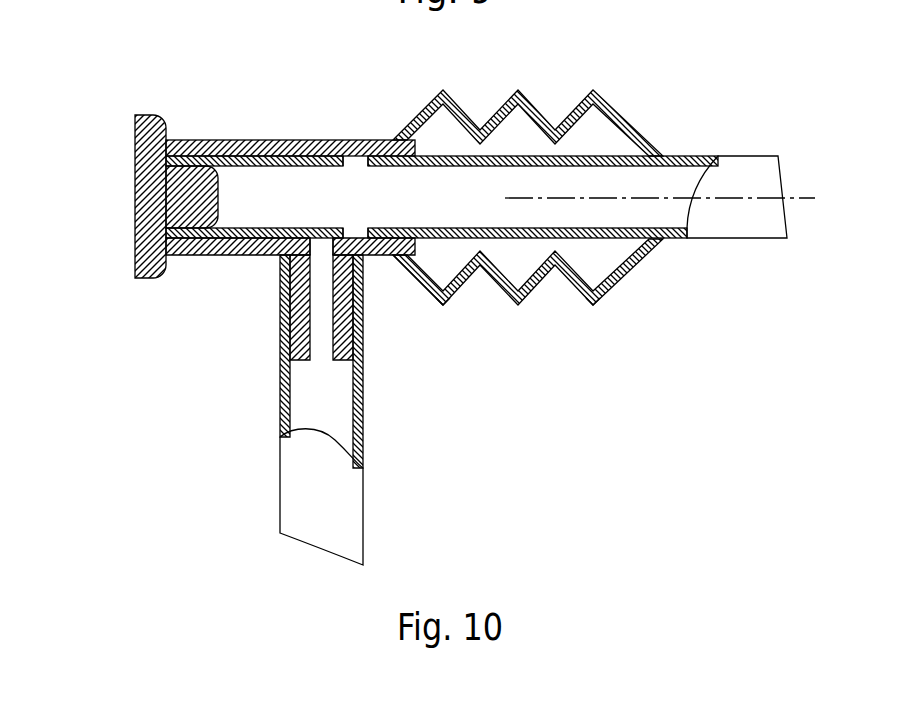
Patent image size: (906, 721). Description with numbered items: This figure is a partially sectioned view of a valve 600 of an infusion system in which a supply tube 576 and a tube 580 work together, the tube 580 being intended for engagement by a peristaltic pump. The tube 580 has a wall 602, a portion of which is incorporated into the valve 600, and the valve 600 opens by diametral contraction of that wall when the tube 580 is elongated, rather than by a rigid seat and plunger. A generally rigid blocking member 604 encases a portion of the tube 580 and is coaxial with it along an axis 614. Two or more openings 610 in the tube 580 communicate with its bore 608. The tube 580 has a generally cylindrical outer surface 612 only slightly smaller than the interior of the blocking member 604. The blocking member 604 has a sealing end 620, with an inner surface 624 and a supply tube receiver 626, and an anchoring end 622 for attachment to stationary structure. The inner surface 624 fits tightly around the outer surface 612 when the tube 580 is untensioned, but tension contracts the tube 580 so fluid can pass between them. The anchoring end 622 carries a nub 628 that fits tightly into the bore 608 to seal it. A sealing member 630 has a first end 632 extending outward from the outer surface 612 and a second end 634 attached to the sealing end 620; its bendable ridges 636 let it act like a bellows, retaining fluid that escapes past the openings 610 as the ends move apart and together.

The tube 580 is at (436, 282).
The supply tube 576 is at (295, 410).
The valve 600 is at (187, 450).
The wall 602 is at (482, 210).
The blocking member 604 is at (285, 282).
The bore 608 is at (682, 179).
The openings 610 is at (358, 228).
The outer surface 612 is at (272, 140).
The axis 614 is at (682, 200).
The sealing end 620 is at (383, 290).
The anchoring end 622 is at (112, 271).
The inner surface 624 is at (299, 162).
The supply tube receiver 626 is at (290, 338).
The nub 628 is at (212, 199).
The sealing member 630 is at (547, 78).
The first end 632 is at (552, 324).
The second end 634 is at (395, 262).
The ridges 636 is at (597, 304).